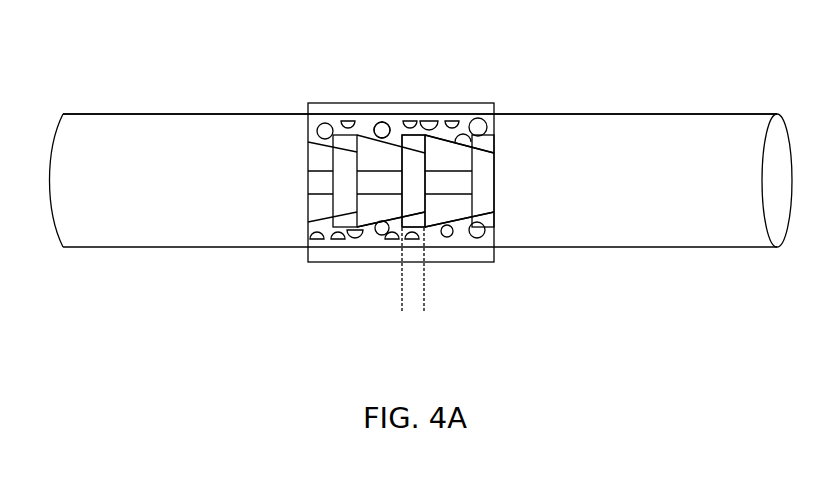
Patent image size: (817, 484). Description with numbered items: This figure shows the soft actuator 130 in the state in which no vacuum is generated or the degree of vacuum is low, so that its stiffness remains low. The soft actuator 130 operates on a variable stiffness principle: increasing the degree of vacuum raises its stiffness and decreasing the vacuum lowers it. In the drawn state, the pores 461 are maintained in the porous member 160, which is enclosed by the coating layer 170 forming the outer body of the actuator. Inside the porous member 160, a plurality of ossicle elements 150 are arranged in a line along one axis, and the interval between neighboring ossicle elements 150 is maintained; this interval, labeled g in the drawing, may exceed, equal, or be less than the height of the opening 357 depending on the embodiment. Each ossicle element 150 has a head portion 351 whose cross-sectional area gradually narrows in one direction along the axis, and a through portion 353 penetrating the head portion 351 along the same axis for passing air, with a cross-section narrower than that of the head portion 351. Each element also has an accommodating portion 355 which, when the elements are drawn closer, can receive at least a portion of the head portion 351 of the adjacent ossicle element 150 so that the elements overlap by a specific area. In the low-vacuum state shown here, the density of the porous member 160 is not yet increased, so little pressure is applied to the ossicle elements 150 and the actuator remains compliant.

The soft actuator 130 is at (639, 86).
The ossicle elements 150 is at (486, 167).
The porous member 160 is at (366, 122).
The coating layer 170 is at (214, 128).
The pores 461 is at (381, 122).
The head portion 351 is at (445, 205).
The through portion 353 is at (467, 183).
The accommodating portion 355 is at (412, 232).
The opening 357 is at (398, 203).
The gap g is at (455, 302).